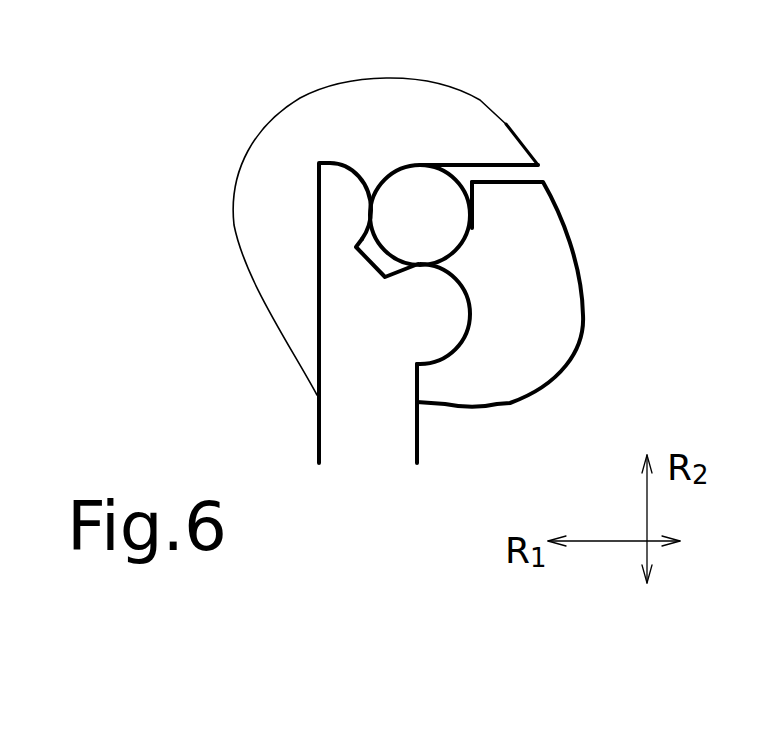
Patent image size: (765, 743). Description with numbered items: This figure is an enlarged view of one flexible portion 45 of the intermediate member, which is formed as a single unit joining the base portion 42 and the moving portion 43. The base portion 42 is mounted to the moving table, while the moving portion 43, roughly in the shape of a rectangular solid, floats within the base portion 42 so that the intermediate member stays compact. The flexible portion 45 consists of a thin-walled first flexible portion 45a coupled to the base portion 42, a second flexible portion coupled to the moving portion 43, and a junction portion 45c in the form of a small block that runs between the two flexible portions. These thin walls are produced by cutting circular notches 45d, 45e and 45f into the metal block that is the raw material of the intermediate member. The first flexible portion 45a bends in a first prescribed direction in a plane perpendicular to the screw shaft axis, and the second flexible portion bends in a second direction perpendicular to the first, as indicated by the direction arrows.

The base portion 42 is at (343, 93).
The moving portion 43 is at (572, 317).
The flexible portion 45 is at (346, 244).
The first flexible portion 45a is at (370, 212).
The junction portion 45c is at (367, 263).
The circular notch 45d is at (349, 179).
The circular notch 45e is at (455, 243).
The circular notch 45f is at (447, 336).